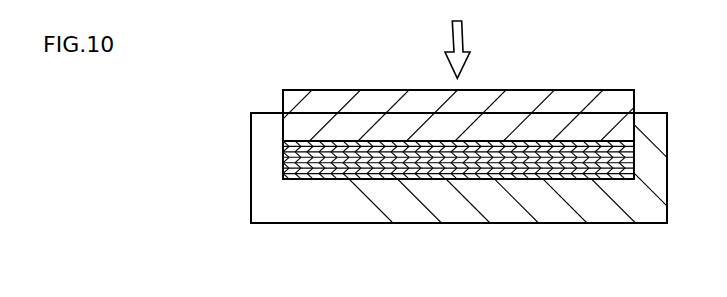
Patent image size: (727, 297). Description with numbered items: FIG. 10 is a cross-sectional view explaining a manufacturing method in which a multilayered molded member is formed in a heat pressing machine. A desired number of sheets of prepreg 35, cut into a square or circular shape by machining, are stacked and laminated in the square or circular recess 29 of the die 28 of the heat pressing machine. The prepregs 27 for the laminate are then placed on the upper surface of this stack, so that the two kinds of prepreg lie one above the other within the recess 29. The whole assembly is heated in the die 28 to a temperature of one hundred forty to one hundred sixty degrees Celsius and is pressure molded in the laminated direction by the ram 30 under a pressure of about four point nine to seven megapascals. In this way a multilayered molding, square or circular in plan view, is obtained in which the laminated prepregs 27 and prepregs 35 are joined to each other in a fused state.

The ram 30 is at (384, 107).
The die 28 is at (262, 172).
The recess 29 is at (348, 163).
The prepreg 35 is at (439, 169).
The prepreg 27 is at (553, 150).